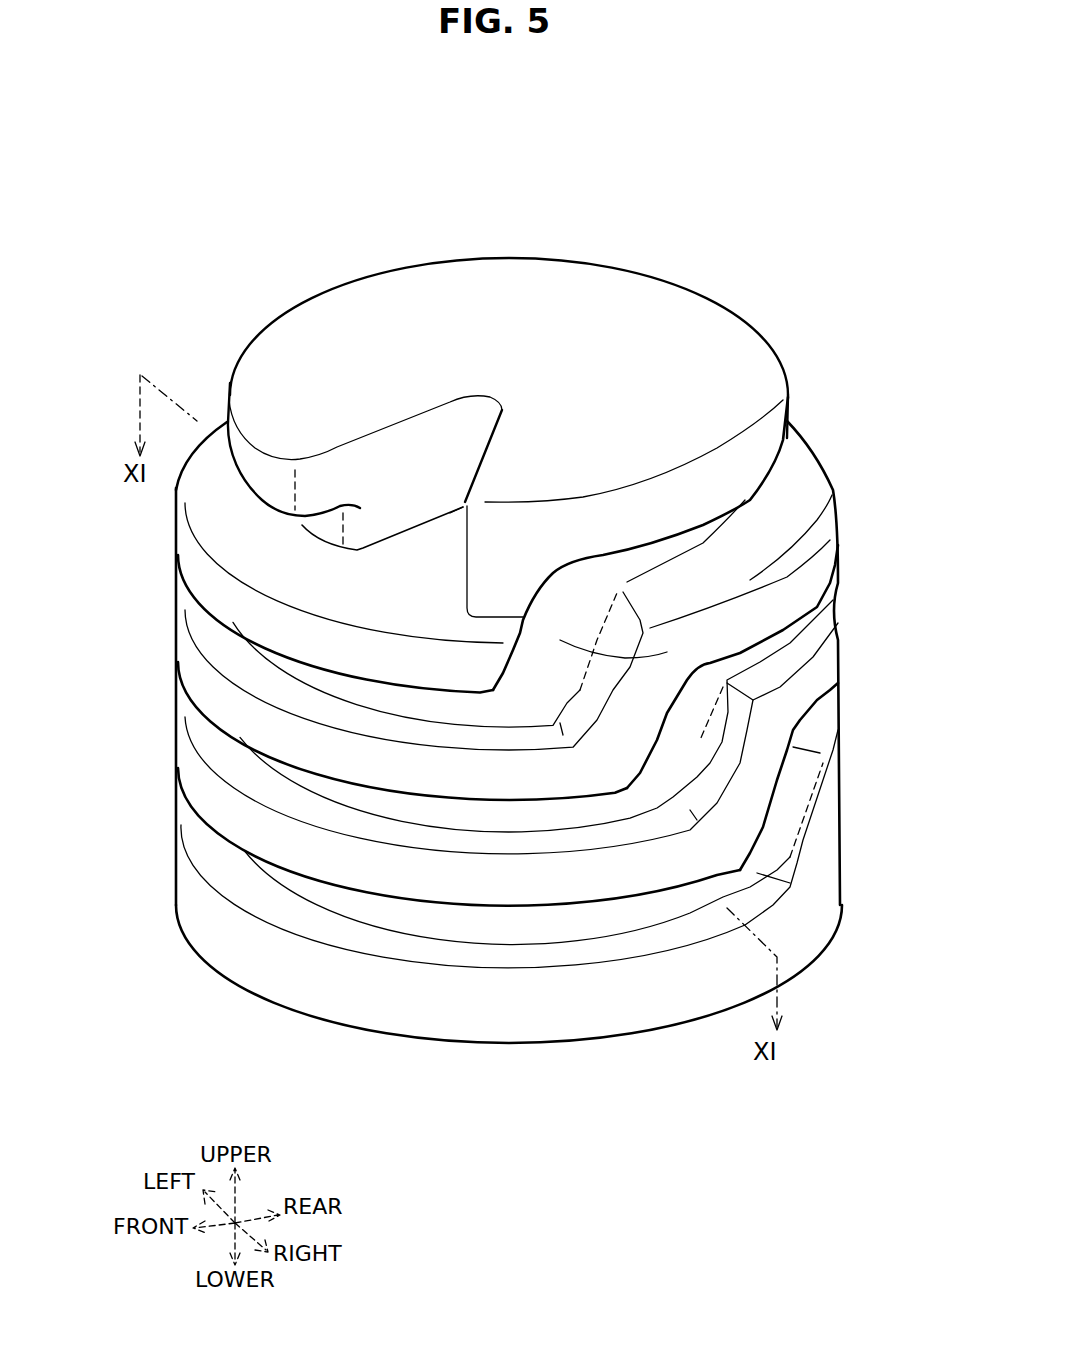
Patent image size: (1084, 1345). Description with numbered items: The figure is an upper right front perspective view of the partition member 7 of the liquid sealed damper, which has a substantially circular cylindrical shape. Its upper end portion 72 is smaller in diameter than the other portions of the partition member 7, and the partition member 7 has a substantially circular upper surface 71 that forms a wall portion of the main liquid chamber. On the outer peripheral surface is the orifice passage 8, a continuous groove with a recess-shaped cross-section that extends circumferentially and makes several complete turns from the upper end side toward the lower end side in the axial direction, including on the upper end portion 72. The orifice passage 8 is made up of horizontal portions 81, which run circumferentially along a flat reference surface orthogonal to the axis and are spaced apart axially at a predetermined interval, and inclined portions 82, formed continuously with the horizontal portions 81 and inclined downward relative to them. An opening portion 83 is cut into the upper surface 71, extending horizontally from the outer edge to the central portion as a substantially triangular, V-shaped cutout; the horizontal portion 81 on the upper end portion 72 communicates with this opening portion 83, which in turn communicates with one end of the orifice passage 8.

The partition member 7 is at (512, 237).
The upper surface 71 is at (633, 310).
The upper end portion 72 is at (208, 416).
The orifice passage 8 is at (495, 699).
The horizontal portions 81 is at (227, 530).
The inclined portions 82 is at (800, 601).
The opening portion 83 is at (400, 477).